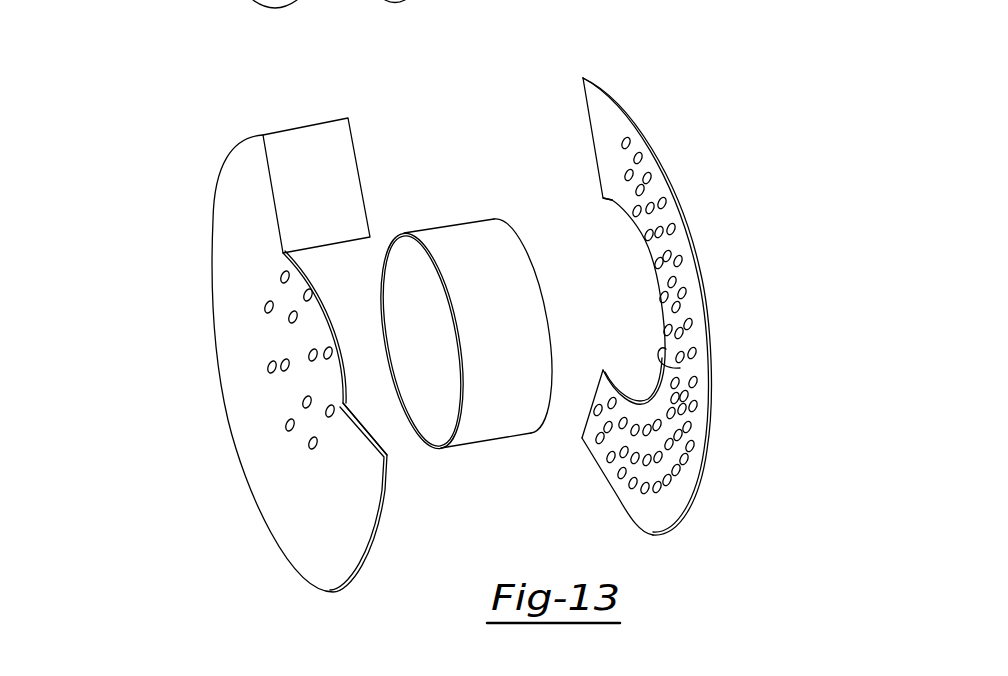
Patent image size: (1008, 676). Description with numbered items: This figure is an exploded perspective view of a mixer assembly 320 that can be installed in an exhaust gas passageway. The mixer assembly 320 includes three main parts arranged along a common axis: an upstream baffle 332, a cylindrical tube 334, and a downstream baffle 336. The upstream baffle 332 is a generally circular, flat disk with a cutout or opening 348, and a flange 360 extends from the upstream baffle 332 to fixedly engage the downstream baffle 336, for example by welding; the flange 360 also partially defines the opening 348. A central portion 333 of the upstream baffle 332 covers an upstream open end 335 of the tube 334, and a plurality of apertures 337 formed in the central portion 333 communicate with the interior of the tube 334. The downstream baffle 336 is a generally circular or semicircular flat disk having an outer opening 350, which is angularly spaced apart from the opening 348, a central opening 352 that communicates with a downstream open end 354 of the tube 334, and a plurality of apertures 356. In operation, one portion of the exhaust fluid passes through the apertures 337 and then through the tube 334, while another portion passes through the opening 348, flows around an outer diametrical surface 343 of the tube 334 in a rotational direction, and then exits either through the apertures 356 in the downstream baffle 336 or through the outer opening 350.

The mixer assembly 320 is at (540, 49).
The upstream baffle 332 is at (210, 231).
The central portion 333 is at (270, 290).
The apertures 337 is at (268, 367).
The opening 348 is at (380, 432).
The flange 360 is at (323, 148).
The cylindrical tube 334 is at (465, 240).
The upstream open end 335 is at (425, 442).
The outer diametrical surface 343 is at (498, 413).
The downstream open end 354 is at (552, 342).
The downstream baffle 336 is at (672, 151).
The outer opening 350 is at (590, 192).
The central opening 352 is at (680, 368).
The apertures 356 is at (676, 308).